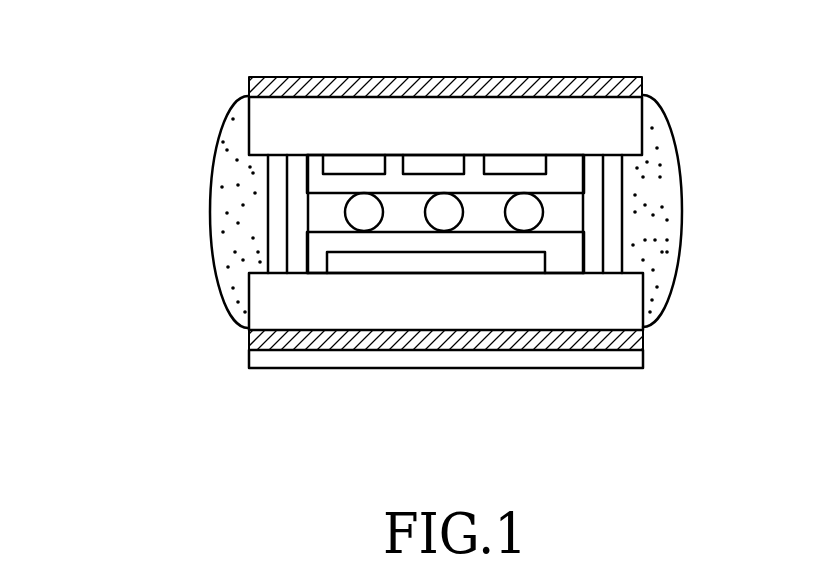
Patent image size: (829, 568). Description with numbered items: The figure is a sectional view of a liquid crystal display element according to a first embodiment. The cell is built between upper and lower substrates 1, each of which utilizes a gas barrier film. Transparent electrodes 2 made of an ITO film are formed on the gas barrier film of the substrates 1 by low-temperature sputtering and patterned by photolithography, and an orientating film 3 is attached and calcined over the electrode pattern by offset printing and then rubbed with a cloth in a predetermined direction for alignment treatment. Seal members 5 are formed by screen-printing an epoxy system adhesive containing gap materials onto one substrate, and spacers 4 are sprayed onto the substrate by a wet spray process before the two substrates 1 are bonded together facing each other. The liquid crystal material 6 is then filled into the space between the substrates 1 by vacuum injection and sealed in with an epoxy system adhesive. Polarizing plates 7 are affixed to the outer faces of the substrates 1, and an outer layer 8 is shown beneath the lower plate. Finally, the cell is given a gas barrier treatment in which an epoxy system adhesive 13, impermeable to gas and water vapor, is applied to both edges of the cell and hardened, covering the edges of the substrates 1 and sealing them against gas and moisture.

The substrates 1 is at (612, 115).
The transparent electrodes 2 is at (505, 167).
The orientating film 3 is at (565, 175).
The spacers 4 is at (438, 210).
The seal members 5 is at (277, 221).
The liquid crystal material 6 is at (307, 212).
The polarizing plates 7 is at (272, 77).
The bottom layer 8 is at (613, 358).
The epoxy system adhesive 13 is at (240, 173).